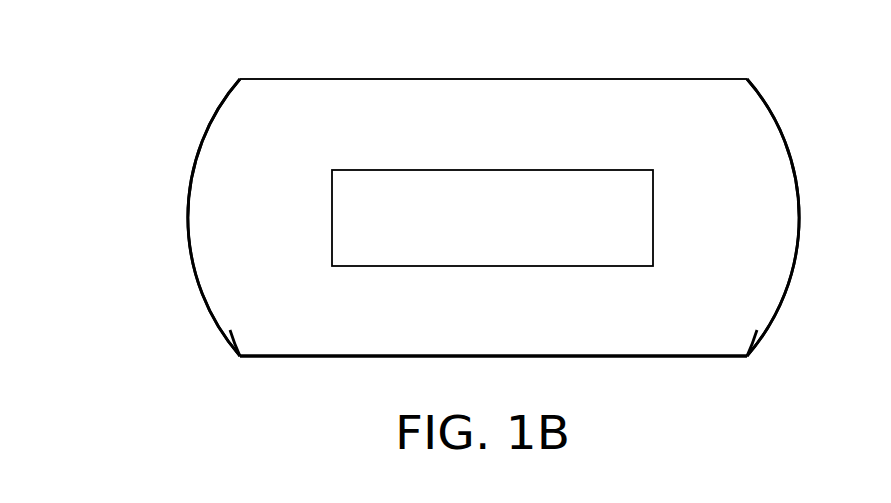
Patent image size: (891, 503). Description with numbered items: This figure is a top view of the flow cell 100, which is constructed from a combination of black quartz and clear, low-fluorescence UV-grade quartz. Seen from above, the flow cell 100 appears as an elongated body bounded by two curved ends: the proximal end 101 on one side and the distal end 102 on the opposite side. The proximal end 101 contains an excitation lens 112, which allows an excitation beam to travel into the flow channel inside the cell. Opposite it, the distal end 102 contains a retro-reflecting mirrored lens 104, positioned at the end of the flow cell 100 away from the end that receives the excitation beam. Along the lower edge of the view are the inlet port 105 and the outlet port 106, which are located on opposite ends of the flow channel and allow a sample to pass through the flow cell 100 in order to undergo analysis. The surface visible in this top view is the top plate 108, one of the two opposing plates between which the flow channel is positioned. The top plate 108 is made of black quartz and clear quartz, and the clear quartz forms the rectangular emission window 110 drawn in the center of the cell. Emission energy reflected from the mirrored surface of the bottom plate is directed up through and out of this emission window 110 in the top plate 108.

The flow cell 100 is at (318, 70).
The proximal end 101 is at (202, 298).
The distal end 102 is at (784, 299).
The retro-reflecting mirrored lens 104 is at (747, 342).
The inlet port 105 is at (313, 357).
The outlet port 106 is at (673, 357).
The top plate 108 is at (500, 90).
The emission window 110 is at (490, 252).
The excitation lens 112 is at (241, 343).